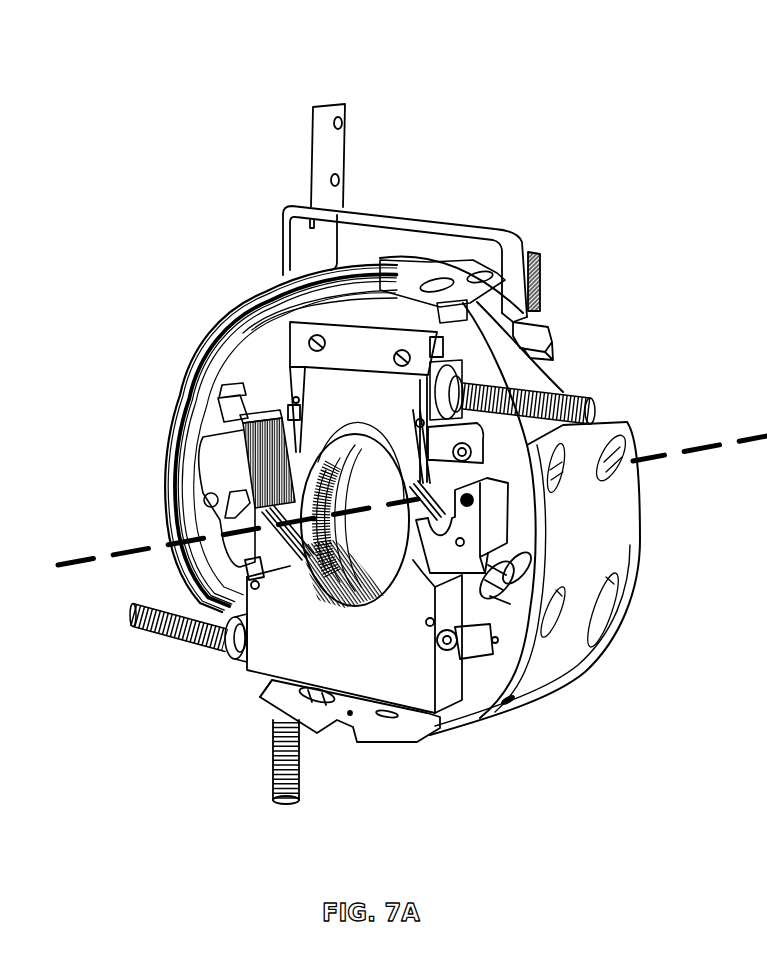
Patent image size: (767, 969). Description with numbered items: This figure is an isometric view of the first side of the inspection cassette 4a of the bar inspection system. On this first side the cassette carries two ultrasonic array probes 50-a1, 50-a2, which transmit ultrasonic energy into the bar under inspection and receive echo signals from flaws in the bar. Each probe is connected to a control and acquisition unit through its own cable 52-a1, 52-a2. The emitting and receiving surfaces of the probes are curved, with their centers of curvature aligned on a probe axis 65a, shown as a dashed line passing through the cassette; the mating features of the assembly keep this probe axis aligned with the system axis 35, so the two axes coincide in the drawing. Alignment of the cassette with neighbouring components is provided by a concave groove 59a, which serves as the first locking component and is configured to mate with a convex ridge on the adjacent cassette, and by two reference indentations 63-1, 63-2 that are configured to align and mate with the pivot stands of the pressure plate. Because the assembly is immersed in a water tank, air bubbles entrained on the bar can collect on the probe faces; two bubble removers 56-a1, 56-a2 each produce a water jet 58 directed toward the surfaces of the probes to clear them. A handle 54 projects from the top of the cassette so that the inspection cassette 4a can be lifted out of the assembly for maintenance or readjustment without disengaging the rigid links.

The inspection cassette 4a is at (490, 127).
The handle 54 is at (383, 213).
The cable 52-a2 is at (585, 400).
The cable 52-a1 is at (178, 632).
The probe axis 65a is at (750, 440).
The system axis 35 is at (766, 322).
The bubble remover 56-a1 is at (220, 462).
The bubble remover 56-a2 is at (470, 521).
The reference indentation 63-1 is at (167, 478).
The reference indentation 63-2 is at (545, 545).
The concave groove 59a is at (170, 527).
The water jet 58 is at (290, 528).
The ultrasonic array probe 50-a2 is at (365, 402).
The ultrasonic array probe 50-a1 is at (353, 680).